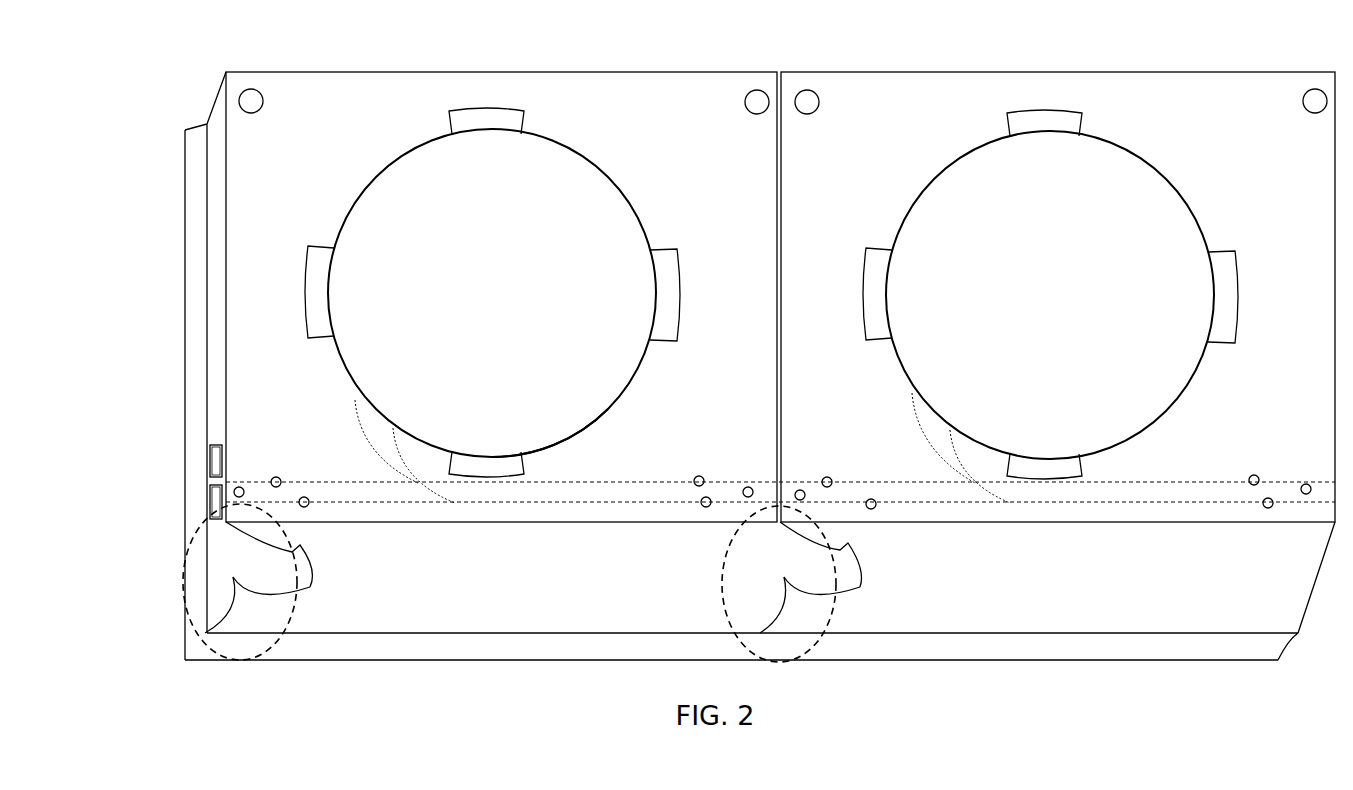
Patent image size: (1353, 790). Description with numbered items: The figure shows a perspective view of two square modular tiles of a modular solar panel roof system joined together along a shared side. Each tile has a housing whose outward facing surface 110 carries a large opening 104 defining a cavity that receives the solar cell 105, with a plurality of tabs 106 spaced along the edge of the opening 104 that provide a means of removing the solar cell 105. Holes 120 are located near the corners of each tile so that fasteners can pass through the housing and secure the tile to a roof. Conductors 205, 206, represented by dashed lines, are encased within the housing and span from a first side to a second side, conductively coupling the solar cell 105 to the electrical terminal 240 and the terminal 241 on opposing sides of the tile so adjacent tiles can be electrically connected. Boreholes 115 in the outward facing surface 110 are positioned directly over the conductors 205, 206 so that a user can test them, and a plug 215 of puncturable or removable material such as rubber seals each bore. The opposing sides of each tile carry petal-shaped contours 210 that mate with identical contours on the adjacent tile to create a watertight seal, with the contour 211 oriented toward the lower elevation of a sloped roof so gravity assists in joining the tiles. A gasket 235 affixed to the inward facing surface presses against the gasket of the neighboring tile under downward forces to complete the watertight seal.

The opening 104 is at (384, 388).
The solar cell 105 is at (623, 377).
The tabs 106 is at (487, 123).
The outward facing surface 110 is at (600, 95).
The boreholes 115 is at (701, 476).
The holes 120 is at (757, 95).
The conductor 205 is at (473, 505).
The conductor 206 is at (418, 483).
The contours 210 is at (310, 587).
The contour 211 is at (860, 587).
The plug 215 is at (694, 474).
The gasket 235 is at (514, 640).
The electrical terminal 240 is at (210, 462).
The terminal 241 is at (210, 503).